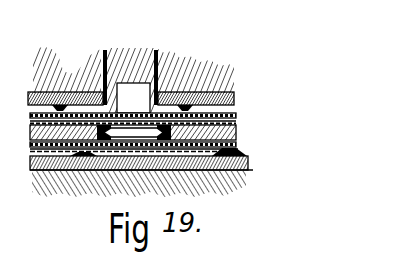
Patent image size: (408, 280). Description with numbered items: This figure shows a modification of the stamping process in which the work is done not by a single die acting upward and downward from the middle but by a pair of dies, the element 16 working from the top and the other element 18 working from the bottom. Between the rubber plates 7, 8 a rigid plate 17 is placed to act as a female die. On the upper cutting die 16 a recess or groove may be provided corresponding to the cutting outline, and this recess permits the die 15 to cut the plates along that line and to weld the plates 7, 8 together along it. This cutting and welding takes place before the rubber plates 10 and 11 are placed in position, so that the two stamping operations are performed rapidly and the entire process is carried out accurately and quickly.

The die 15 is at (157, 63).
The upper cutting die 16 is at (192, 89).
The rubber plate 11 is at (229, 113).
The rubber plate 7 is at (230, 119).
The rubber plate 8 is at (236, 142).
The rubber plate 10 is at (226, 149).
The rigid plate 17 is at (225, 164).
The die 18 is at (212, 180).